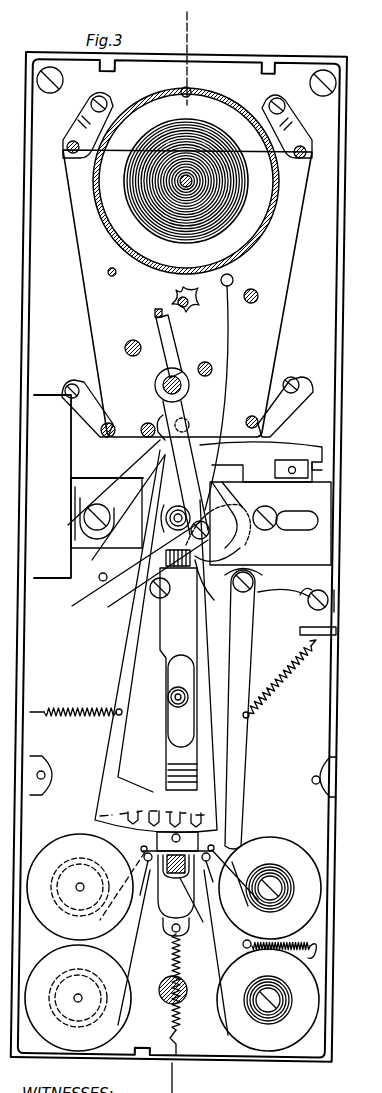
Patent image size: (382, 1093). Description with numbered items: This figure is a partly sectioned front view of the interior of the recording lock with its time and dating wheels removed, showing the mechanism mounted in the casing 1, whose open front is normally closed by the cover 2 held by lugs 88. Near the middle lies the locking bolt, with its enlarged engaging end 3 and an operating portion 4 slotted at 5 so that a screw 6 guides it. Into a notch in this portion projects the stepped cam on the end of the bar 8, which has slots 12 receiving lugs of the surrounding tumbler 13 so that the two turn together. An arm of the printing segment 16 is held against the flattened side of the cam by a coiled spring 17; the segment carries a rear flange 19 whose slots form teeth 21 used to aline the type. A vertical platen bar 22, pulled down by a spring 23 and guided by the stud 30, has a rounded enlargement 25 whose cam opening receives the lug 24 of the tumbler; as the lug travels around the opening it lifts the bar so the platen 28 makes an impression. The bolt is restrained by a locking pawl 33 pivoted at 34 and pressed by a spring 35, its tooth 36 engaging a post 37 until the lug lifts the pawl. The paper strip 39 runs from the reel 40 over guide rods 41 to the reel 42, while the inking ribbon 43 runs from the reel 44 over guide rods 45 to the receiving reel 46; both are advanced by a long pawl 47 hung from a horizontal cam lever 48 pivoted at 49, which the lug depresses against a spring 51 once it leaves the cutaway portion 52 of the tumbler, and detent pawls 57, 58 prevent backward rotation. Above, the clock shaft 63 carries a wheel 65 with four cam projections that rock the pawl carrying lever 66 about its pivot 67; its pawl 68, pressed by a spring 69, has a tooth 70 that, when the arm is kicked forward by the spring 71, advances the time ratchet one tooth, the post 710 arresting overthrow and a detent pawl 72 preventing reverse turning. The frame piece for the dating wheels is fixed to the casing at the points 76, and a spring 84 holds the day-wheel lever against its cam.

The casing 1 is at (341, 398).
The cover 2 is at (187, 52).
The engaging end of locking bolt 3 is at (88, 486).
The operating portion of locking bolt 4 is at (270, 523).
The slot 5 is at (305, 516).
The screw 6 is at (270, 512).
The stepped cam bar 8 is at (176, 507).
The slots 12 is at (166, 520).
The tumbler 13 is at (224, 509).
The printing segment 16 is at (128, 636).
The coiled spring 17 is at (72, 708).
The flange 19 is at (208, 822).
The teeth 21 is at (152, 812).
The platen bar 22 is at (166, 748).
The spring 23 is at (172, 954).
The lug 24 is at (208, 600).
The rounded enlargement 25 is at (236, 538).
The platen 28 is at (189, 929).
The stud 30 is at (170, 699).
The locking pawl 33 is at (261, 462).
The pivot 34 is at (80, 530).
The spring 35 is at (72, 509).
The tooth 36 is at (322, 465).
The post 37 is at (276, 466).
The paper strip 39 is at (128, 938).
The reel 40 is at (118, 1024).
The guide rods 41 is at (174, 884).
The reel 42 is at (232, 1022).
The inking ribbon 43 is at (226, 879).
The reel 44 is at (80, 887).
The guide rods 45 is at (143, 850).
The receiving reel 46 is at (292, 862).
The long pawl 47 is at (238, 760).
The cam lever 48 is at (256, 580).
The pivot 49 is at (150, 591).
The spring 51 is at (279, 679).
The cutaway portion 52 is at (232, 551).
The detent pawl 57 is at (318, 952).
The detent pawl 58 is at (240, 946).
The shaft 63 is at (178, 301).
The wheel 65 is at (193, 311).
The pawl carrying lever 66 is at (158, 326).
The pivot 67 is at (163, 388).
The pawl 68 is at (128, 560).
The spring 69 is at (230, 522).
The tooth 70 is at (100, 598).
The spring 71 is at (229, 369).
The detent pawl 72 is at (292, 596).
The fixing points 76 is at (46, 775).
The spring 84 is at (170, 1054).
The lugs 88 is at (110, 71).
The post 710 is at (88, 579).